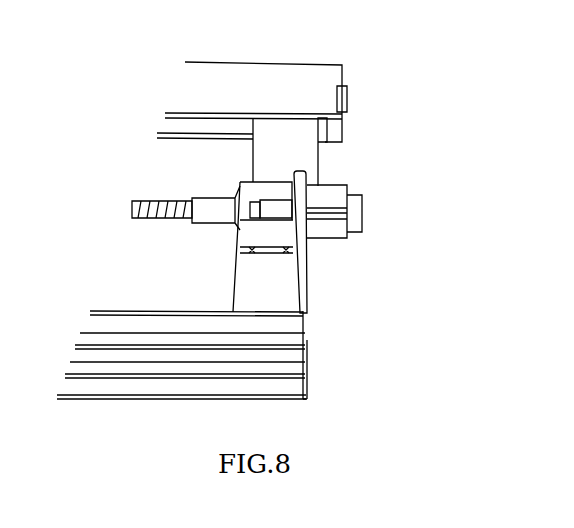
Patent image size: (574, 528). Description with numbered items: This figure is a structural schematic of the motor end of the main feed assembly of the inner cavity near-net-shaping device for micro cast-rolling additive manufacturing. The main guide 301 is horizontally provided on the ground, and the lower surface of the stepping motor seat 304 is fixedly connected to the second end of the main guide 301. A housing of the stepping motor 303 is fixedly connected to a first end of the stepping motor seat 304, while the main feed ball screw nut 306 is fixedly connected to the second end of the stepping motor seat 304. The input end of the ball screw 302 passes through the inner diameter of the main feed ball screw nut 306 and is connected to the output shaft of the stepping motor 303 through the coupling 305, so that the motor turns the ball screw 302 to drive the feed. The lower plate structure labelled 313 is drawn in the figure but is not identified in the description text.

The main guide 301 is at (323, 82).
The ball screw 302 is at (140, 210).
The stepping motor 303 is at (352, 208).
The stepping motor seat 304 is at (297, 190).
The coupling 305 is at (270, 210).
The main feed ball screw nut 306 is at (202, 208).
The bottom plate 313 is at (287, 250).